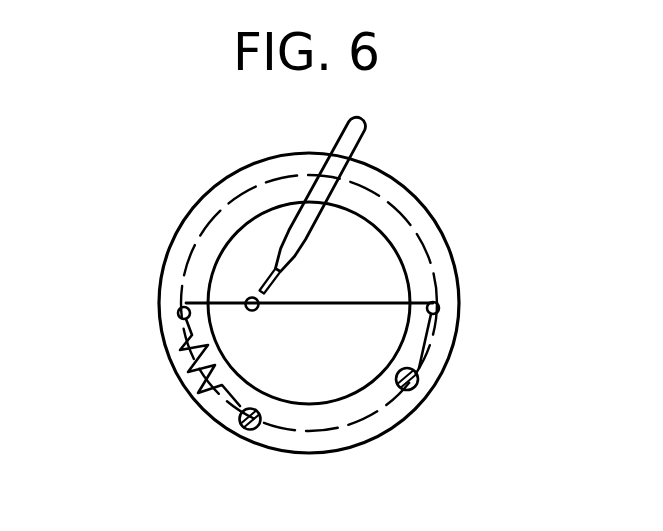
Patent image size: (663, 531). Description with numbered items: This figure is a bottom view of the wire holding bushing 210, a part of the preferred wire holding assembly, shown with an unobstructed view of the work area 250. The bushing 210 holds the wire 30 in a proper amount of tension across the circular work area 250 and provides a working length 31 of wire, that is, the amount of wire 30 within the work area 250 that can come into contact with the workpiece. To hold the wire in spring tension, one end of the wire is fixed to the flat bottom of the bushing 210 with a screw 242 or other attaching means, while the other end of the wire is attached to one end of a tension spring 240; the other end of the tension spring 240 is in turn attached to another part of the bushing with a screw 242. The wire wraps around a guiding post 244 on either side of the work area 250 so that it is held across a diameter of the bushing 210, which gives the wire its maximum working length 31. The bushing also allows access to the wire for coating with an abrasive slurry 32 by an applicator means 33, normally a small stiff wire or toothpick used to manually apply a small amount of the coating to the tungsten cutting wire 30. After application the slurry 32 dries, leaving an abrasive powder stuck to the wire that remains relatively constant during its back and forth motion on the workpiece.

The wire 30 is at (433, 352).
The working length 31 is at (335, 302).
The abrasive slurry 32 is at (254, 311).
The applicator means 33 is at (357, 139).
The wire holding bushing 210 is at (167, 255).
The tension spring 240 is at (182, 376).
The screw 242 is at (242, 430).
The guiding post 244 is at (427, 312).
The work area 250 is at (325, 393).